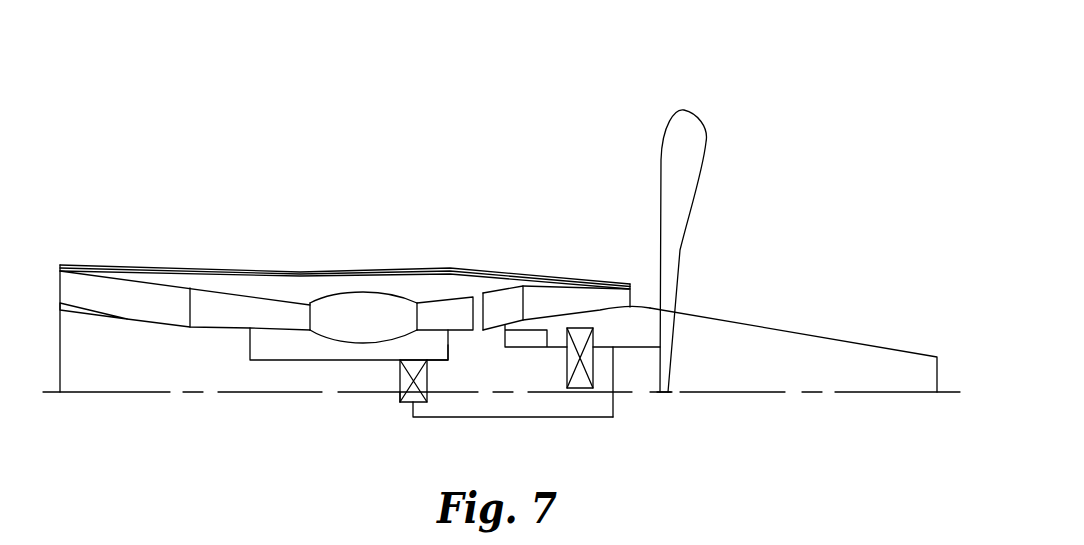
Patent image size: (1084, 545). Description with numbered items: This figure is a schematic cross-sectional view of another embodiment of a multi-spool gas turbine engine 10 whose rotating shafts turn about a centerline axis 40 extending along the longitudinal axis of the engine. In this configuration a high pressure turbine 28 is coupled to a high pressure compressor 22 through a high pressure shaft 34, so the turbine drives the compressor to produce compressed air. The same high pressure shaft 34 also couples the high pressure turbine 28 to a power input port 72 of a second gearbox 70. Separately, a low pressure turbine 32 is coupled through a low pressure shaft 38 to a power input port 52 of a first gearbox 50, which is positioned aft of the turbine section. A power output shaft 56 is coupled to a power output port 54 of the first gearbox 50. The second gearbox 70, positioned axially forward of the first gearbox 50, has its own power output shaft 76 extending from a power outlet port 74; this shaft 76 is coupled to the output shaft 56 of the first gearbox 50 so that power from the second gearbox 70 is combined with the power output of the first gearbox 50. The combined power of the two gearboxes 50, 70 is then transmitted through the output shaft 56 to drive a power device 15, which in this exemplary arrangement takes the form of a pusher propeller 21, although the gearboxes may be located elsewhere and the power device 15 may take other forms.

The gas turbine engine 10 is at (383, 218).
The power device 15 is at (705, 97).
The pusher propeller 21 is at (688, 138).
The high pressure compressor 22 is at (249, 308).
The high pressure turbine 28 is at (440, 308).
The low pressure turbine 32 is at (500, 296).
The low pressure shaft 38 is at (546, 341).
The high pressure shaft 34 is at (330, 360).
The centerline axis 40 is at (850, 393).
The first gearbox 50 is at (578, 380).
The power input port 52 is at (567, 356).
The power output port 54 is at (593, 358).
The power output shaft 56 is at (648, 347).
The second gearbox 70 is at (397, 391).
The power input port 72 is at (412, 358).
The power outlet port 74 is at (413, 403).
The power output shaft 76 is at (455, 417).